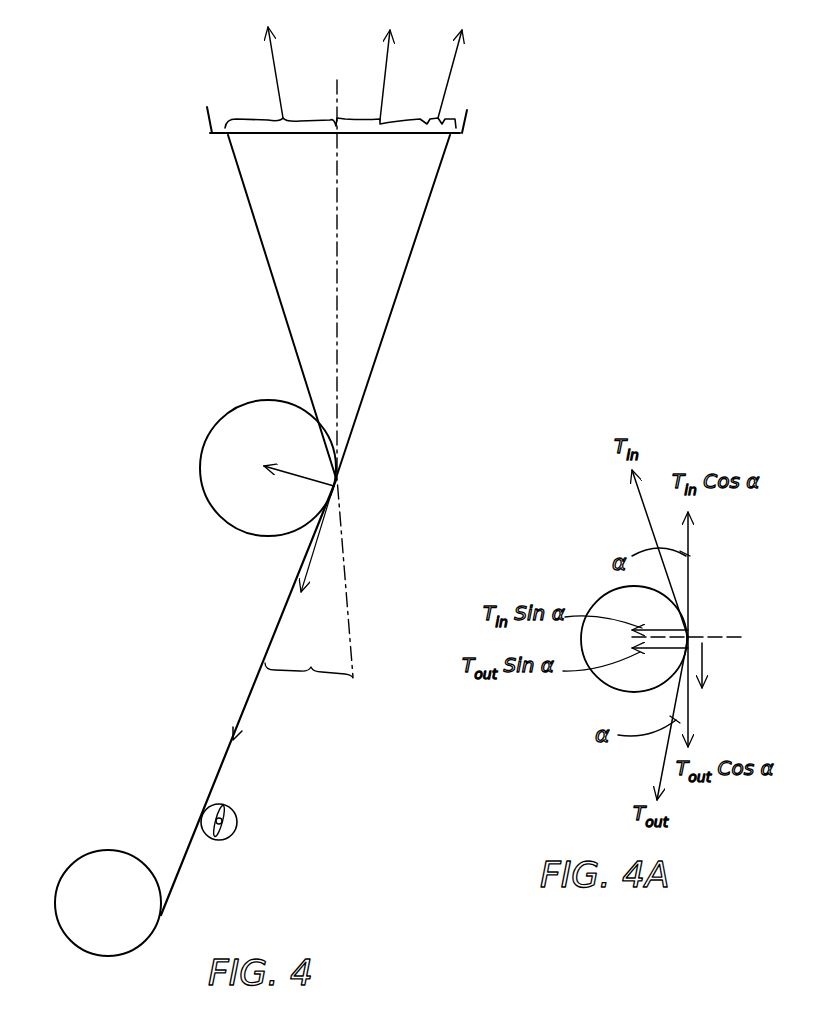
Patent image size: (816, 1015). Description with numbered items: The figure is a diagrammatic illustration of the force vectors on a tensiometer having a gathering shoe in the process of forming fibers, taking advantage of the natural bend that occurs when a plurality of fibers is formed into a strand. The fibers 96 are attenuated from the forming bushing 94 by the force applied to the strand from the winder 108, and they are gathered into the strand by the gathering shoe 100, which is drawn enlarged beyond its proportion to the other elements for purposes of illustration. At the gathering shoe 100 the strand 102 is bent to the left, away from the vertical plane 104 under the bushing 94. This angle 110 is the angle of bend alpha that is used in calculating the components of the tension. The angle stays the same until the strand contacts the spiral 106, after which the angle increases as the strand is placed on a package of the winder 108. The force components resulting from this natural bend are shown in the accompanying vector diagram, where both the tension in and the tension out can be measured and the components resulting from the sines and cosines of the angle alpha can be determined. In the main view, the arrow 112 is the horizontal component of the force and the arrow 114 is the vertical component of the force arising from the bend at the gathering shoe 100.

The forming bushing 94 is at (470, 114).
The fibers 96 is at (258, 228).
The gathering shoe 100 is at (233, 420).
The web 102 is at (243, 704).
The reference axis 104 is at (355, 677).
The spiral 106 is at (230, 832).
The winder 108 is at (83, 860).
The angle of bend 110 is at (309, 682).
The horizontal component of the force 112 is at (296, 474).
The vertical component of the force 114 is at (313, 557).